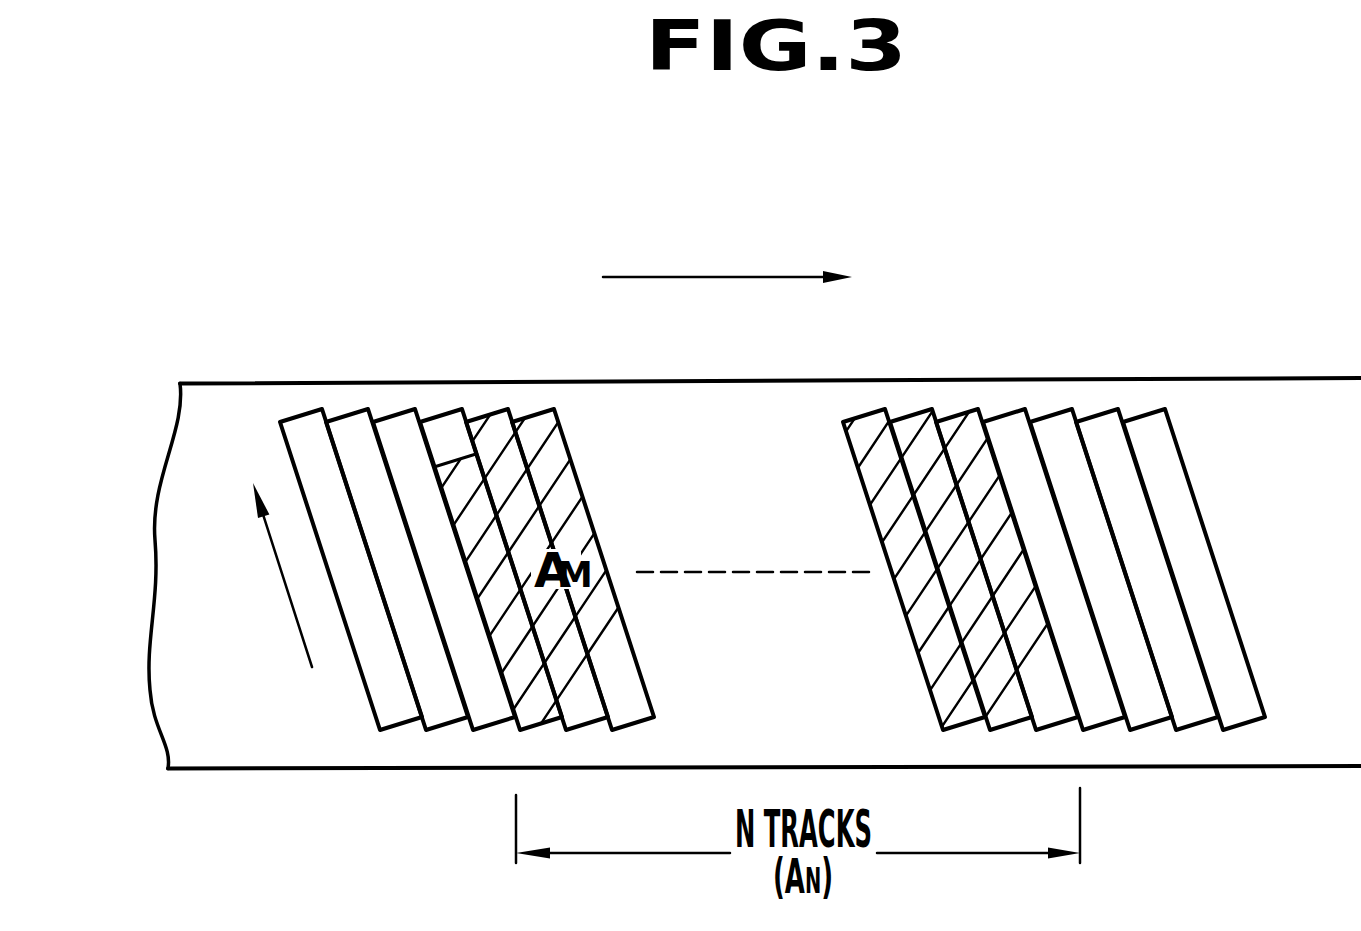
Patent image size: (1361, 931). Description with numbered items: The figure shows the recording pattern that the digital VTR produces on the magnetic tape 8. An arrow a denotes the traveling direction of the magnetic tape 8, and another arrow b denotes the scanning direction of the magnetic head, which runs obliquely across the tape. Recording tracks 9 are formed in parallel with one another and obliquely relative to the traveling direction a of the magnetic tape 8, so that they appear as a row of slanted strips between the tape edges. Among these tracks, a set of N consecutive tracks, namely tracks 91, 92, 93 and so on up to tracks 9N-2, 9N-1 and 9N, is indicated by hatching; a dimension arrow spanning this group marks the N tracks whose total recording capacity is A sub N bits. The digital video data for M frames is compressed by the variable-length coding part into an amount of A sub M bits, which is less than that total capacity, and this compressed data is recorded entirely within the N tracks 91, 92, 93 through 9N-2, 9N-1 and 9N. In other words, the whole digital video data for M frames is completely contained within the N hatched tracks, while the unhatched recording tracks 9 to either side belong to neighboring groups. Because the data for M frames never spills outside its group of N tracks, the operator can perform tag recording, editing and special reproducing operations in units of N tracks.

The magnetic tape 8 is at (1343, 380).
The recording tracks 9 is at (1147, 413).
The first track 91 is at (965, 408).
The second track 92 is at (912, 408).
The third track 93 is at (867, 408).
The N-th track 9N is at (440, 413).
The (N-1)-th track 9N-1 is at (482, 413).
The (N-2)-th track 9N-2 is at (540, 413).
The traveling direction a is at (733, 277).
The scanning direction b is at (283, 588).